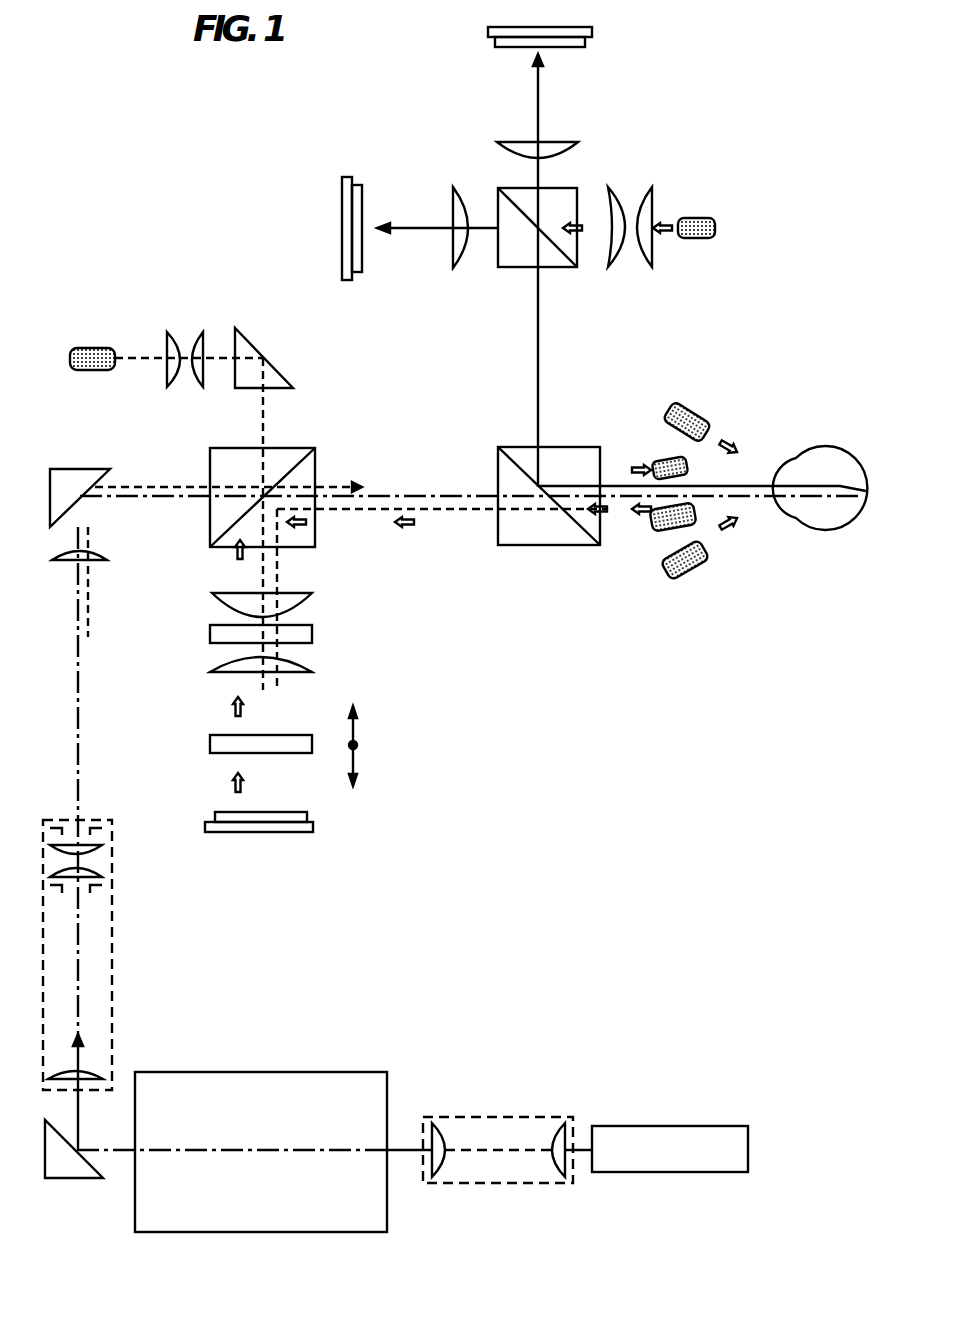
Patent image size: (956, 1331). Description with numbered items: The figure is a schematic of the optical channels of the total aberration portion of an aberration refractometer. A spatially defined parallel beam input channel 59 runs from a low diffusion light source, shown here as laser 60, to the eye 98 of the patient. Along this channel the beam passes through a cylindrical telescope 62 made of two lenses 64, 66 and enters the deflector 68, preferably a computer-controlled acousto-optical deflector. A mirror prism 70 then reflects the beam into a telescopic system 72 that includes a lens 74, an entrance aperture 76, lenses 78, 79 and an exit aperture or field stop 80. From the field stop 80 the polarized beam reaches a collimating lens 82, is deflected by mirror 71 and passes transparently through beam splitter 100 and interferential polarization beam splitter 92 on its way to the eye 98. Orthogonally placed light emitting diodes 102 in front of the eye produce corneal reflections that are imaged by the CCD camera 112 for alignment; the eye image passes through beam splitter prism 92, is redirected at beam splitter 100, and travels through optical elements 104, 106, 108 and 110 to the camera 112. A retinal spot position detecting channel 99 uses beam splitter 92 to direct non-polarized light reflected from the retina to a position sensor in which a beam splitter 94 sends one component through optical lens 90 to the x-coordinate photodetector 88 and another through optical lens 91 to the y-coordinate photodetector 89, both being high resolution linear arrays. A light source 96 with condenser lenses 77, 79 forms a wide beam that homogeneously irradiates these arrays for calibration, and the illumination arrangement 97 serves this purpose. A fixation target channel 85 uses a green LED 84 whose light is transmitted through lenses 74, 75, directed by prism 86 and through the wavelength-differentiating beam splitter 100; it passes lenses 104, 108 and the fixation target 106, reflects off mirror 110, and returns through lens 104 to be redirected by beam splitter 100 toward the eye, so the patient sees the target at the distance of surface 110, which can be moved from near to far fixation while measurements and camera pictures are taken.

The spatially defined parallel beam input channel 59 is at (729, 1101).
The laser 60 is at (668, 1127).
The cylindrical telescope 62 is at (485, 1183).
The lens 64 is at (555, 1130).
The lens 66 is at (440, 1130).
The deflector 68 is at (262, 1072).
The mirror prism 70 is at (70, 1178).
The mirror 71 is at (92, 469).
The telescopic system 72 is at (112, 995).
The lens 74 is at (172, 335).
The lens 75 is at (200, 335).
The entrance aperture 76 is at (95, 890).
The condenser lens 77 is at (640, 265).
The lens 78 is at (100, 872).
The lens 79 is at (608, 262).
The field stop 80 is at (62, 825).
The collimating lens 82 is at (95, 558).
The LED 84 is at (100, 348).
The fixation target channel 85 is at (254, 312).
The prism 86 is at (280, 372).
The x-coordinate photodetector 88 is at (568, 47).
The y-coordinate photodetector 89 is at (362, 185).
The optical lens 90 is at (560, 142).
The optical lens 91 is at (462, 262).
The interferential polarization beam splitter 92 is at (532, 545).
The beam splitter 94 is at (520, 267).
The light source 96 is at (700, 217).
The illumination channel 97 is at (710, 270).
The eye 98 is at (855, 462).
The retinal spot position detecting channel 99 is at (489, 86).
The beam splitter 100 is at (315, 462).
The light emitting diodes 102 is at (663, 457).
The lens 104 is at (295, 597).
The fixation target 106 is at (312, 632).
The lens 108 is at (222, 668).
The mirror 110 is at (210, 745).
The CCD camera 112 is at (295, 832).